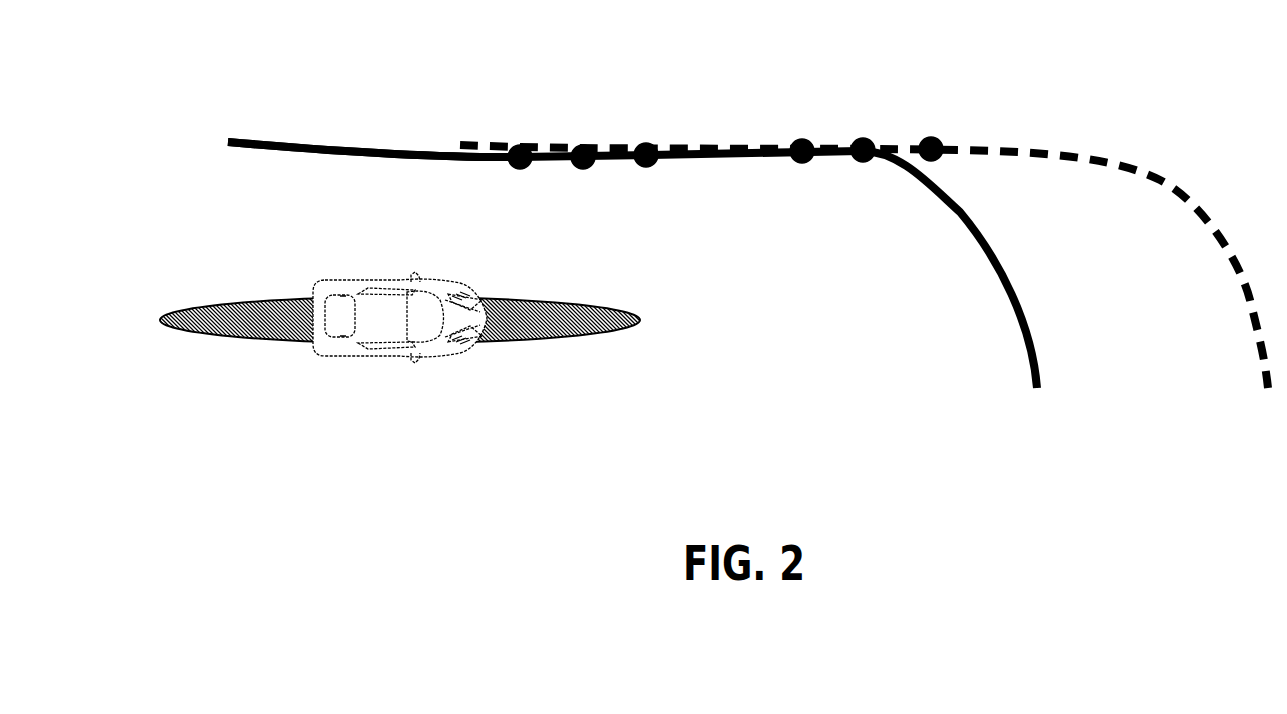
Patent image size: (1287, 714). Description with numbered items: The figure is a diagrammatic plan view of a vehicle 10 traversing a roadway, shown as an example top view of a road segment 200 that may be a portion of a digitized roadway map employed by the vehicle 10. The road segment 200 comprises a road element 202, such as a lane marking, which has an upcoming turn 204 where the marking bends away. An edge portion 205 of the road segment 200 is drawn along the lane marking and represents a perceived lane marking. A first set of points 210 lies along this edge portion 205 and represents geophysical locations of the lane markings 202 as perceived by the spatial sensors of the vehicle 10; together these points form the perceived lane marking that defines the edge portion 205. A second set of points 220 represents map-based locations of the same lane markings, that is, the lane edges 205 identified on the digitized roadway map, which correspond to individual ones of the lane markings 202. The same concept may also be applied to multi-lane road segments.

The vehicle 10 is at (440, 257).
The road segment 200 is at (640, 268).
The road element 202 is at (433, 151).
The upcoming turn 204 is at (980, 360).
The edge portion 205 is at (298, 143).
The first set of points 210 is at (654, 131).
The second set of points 220 is at (936, 132).